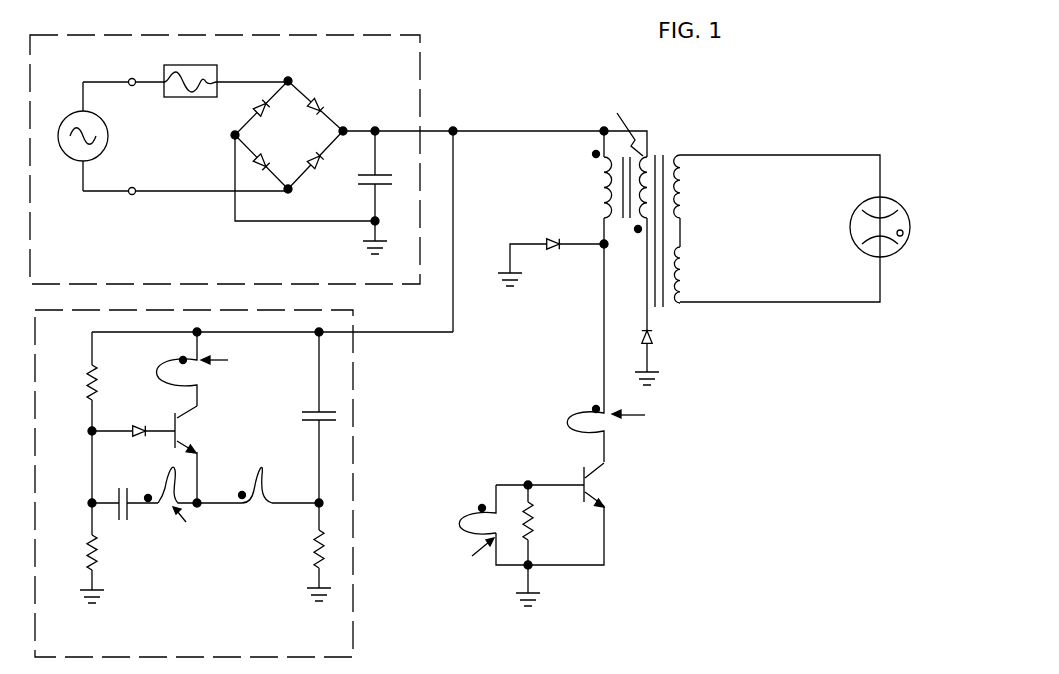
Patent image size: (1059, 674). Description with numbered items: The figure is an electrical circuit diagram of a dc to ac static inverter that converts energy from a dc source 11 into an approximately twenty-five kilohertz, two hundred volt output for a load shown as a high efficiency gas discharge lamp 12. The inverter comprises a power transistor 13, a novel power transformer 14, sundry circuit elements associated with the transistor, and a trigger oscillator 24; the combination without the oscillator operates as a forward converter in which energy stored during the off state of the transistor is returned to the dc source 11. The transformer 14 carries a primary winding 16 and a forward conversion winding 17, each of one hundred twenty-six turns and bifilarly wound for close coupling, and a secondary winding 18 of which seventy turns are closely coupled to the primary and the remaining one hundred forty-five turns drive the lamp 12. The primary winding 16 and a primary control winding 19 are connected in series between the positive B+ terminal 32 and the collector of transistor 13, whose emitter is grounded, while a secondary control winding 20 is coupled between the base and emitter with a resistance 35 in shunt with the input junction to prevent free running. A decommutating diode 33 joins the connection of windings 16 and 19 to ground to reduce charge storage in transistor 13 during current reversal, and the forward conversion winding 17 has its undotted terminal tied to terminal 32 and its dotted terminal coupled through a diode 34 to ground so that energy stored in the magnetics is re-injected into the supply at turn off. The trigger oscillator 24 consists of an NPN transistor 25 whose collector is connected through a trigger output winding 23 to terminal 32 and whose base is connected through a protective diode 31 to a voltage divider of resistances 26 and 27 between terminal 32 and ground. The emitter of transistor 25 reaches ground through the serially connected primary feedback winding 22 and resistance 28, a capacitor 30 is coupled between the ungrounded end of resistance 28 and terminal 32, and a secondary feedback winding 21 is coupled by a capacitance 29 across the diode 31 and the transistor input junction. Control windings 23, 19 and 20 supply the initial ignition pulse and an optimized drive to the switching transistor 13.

The dc source 11 is at (420, 50).
The gas discharge lamp load 12 is at (850, 230).
The power transistor 13 is at (602, 465).
The power transformer 14 is at (664, 82).
The primary winding 16 is at (609, 207).
The forward conversion winding 17 is at (637, 232).
The secondary winding 18 is at (676, 154).
The primary control winding 19 is at (589, 412).
The secondary control winding 20 is at (470, 512).
The secondary feedback winding 21 is at (168, 508).
The primary feedback winding 22 is at (265, 472).
The trigger output winding 23 is at (174, 367).
The trigger oscillator 24 is at (353, 470).
The NPN transistor 25 is at (192, 418).
The resistor 26 is at (90, 371).
The resistor 27 is at (91, 546).
The resistor 28 is at (315, 544).
The capacitor 29 is at (125, 522).
The capacitor 30 is at (306, 411).
The protective diode 31 is at (142, 427).
The positive terminal 32 is at (454, 128).
The decommutating diode 33 is at (545, 243).
The diode 34 is at (655, 343).
The resistor 35 is at (536, 537).